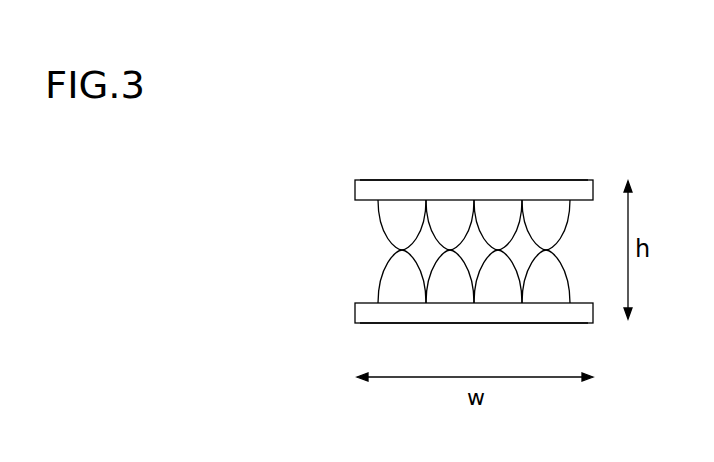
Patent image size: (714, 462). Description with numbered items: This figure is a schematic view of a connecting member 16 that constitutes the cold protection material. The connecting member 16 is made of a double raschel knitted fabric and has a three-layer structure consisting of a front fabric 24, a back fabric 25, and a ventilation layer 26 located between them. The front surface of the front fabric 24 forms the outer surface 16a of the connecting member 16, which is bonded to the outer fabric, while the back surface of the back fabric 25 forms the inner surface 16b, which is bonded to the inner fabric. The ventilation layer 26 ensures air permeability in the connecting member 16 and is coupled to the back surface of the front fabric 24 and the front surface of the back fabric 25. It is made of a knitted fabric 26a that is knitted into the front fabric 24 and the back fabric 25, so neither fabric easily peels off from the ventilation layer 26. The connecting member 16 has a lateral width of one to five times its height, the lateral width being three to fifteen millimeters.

The connecting member 16 is at (372, 163).
The outer surface 16a is at (531, 179).
The inner surface 16b is at (397, 324).
The front fabric 24 is at (455, 179).
The back fabric 25 is at (498, 313).
The ventilation layer 26 is at (368, 248).
The knitted fabric 26a is at (377, 221).